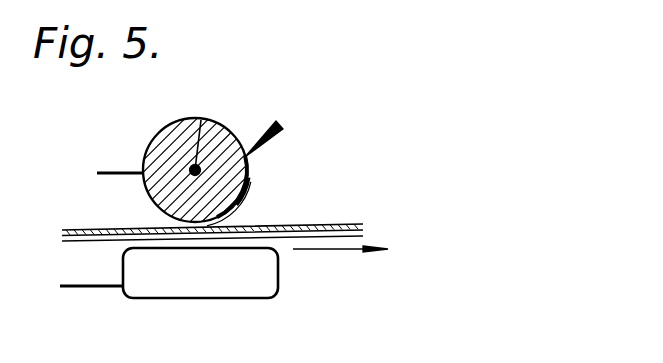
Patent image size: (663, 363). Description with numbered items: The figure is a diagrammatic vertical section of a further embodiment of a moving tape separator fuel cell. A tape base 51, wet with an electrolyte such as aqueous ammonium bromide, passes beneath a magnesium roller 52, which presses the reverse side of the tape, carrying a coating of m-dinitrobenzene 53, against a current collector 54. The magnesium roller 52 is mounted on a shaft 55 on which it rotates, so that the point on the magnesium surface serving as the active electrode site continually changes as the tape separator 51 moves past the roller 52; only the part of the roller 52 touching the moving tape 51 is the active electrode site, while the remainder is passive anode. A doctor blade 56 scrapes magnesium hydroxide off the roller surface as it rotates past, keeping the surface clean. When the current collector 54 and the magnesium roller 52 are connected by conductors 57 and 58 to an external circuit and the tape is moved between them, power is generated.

The tape base 51 is at (355, 224).
The magnesium roller 52 is at (247, 168).
The coating of m-dinitrobenzene 53 is at (91, 241).
The current collector 54 is at (218, 298).
The shaft 55 is at (201, 120).
The doctor blade 56 is at (283, 124).
The conductor 57 is at (107, 170).
The conductor 58 is at (78, 288).